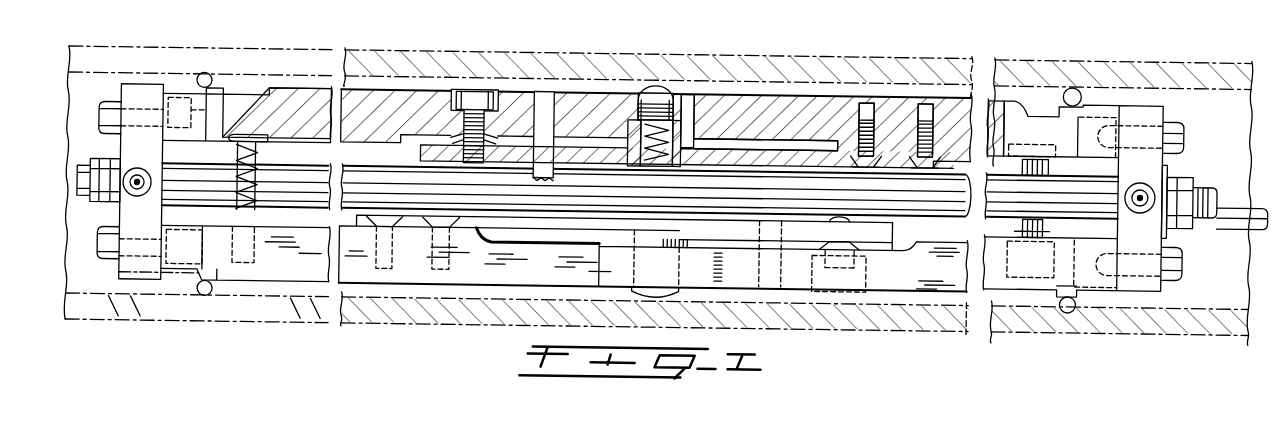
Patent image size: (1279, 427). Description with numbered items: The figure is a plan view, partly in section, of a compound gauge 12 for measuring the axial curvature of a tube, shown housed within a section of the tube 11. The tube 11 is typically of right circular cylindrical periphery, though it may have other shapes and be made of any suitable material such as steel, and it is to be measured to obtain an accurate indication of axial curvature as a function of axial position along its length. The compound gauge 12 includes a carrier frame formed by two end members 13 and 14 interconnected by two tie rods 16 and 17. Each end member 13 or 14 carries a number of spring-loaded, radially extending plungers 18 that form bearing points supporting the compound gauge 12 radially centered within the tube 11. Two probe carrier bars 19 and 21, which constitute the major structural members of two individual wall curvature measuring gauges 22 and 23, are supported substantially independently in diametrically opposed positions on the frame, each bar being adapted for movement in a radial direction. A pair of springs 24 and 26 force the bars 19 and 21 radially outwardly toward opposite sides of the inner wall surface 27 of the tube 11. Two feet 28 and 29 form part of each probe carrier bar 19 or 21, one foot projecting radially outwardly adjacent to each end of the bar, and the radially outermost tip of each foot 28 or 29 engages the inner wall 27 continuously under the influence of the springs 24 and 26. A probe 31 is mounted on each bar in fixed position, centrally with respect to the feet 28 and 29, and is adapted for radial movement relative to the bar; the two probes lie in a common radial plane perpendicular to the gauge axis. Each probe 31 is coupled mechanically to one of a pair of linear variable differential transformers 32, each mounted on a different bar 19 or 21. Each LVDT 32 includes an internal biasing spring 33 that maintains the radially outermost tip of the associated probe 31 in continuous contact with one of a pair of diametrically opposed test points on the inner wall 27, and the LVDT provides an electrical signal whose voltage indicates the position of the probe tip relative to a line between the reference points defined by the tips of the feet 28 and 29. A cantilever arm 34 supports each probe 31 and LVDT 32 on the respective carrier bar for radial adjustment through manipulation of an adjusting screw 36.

The tube 11 is at (824, 58).
The compound gauge 12 is at (1199, 149).
The end member 13 is at (137, 103).
The end member 14 is at (1160, 110).
The tie rod 16 is at (182, 173).
The tie rod 17 is at (354, 170).
The plunger 18 is at (140, 178).
The probe carrier bar 19 is at (368, 97).
The probe carrier bar 21 is at (278, 270).
The wall curvature measuring gauge 22 is at (915, 90).
The wall curvature measuring gauge 23 is at (499, 294).
The spring 24 is at (268, 170).
The spring 26 is at (1020, 232).
The inner wall surface 27 is at (580, 84).
The foot 28 is at (204, 78).
The foot 29 is at (1076, 82).
The probe 31 is at (653, 87).
The linear variable differential transformer 32 is at (686, 90).
The internal biasing spring 33 is at (655, 163).
The cantilever arm 34 is at (763, 166).
The adjusting screw 36 is at (473, 165).